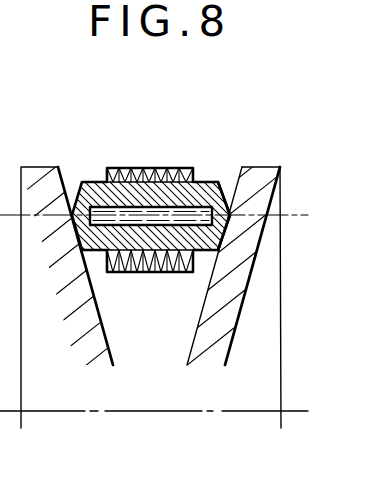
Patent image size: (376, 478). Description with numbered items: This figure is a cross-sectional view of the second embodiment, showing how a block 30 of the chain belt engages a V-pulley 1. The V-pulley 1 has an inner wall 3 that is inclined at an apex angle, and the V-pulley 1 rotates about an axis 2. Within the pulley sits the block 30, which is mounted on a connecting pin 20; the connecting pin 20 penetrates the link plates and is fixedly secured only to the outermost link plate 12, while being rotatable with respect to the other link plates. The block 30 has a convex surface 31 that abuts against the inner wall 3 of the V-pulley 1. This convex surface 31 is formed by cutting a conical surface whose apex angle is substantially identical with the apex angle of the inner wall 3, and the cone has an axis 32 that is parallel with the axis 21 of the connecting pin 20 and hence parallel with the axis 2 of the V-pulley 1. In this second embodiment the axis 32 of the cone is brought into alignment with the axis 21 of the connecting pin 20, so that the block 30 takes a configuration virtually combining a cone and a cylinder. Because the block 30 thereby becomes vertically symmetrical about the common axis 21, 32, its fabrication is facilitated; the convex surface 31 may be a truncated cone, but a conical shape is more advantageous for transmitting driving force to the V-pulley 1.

The V-pulley 1 is at (265, 357).
The axis of the V-pulley 2 is at (295, 413).
The inner wall of the V-pulley 3 is at (106, 332).
The outermost link plate 12 is at (113, 176).
The connecting pin 20 is at (141, 226).
The axis of the connecting pin 21 is at (296, 214).
The block 30 is at (198, 196).
The convex surface 31 is at (226, 196).
The axis of the cone 32 is at (296, 214).